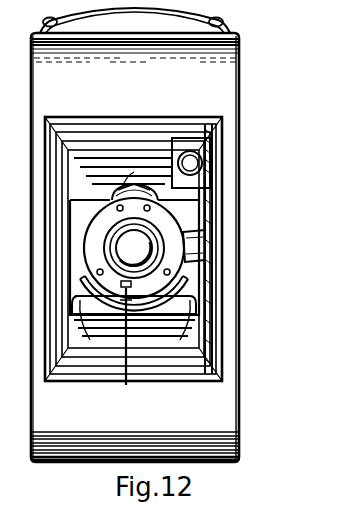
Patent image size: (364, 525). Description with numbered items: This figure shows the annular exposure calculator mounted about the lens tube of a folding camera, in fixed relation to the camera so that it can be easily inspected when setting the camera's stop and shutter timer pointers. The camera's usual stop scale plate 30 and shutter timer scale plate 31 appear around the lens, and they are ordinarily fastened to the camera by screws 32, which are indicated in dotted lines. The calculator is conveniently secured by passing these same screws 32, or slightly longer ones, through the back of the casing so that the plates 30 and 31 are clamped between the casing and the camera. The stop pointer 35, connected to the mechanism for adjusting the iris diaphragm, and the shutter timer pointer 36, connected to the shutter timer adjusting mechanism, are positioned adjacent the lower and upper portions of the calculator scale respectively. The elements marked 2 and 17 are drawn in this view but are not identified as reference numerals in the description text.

The camera body 2 is at (172, 225).
The focusing lever 17 is at (193, 248).
The stop scale plate 30 is at (85, 281).
The shutter timer scale plate 31 is at (135, 183).
The screws 32 is at (118, 210).
The stop pointer 35 is at (122, 346).
The shutter timer pointer 36 is at (127, 183).